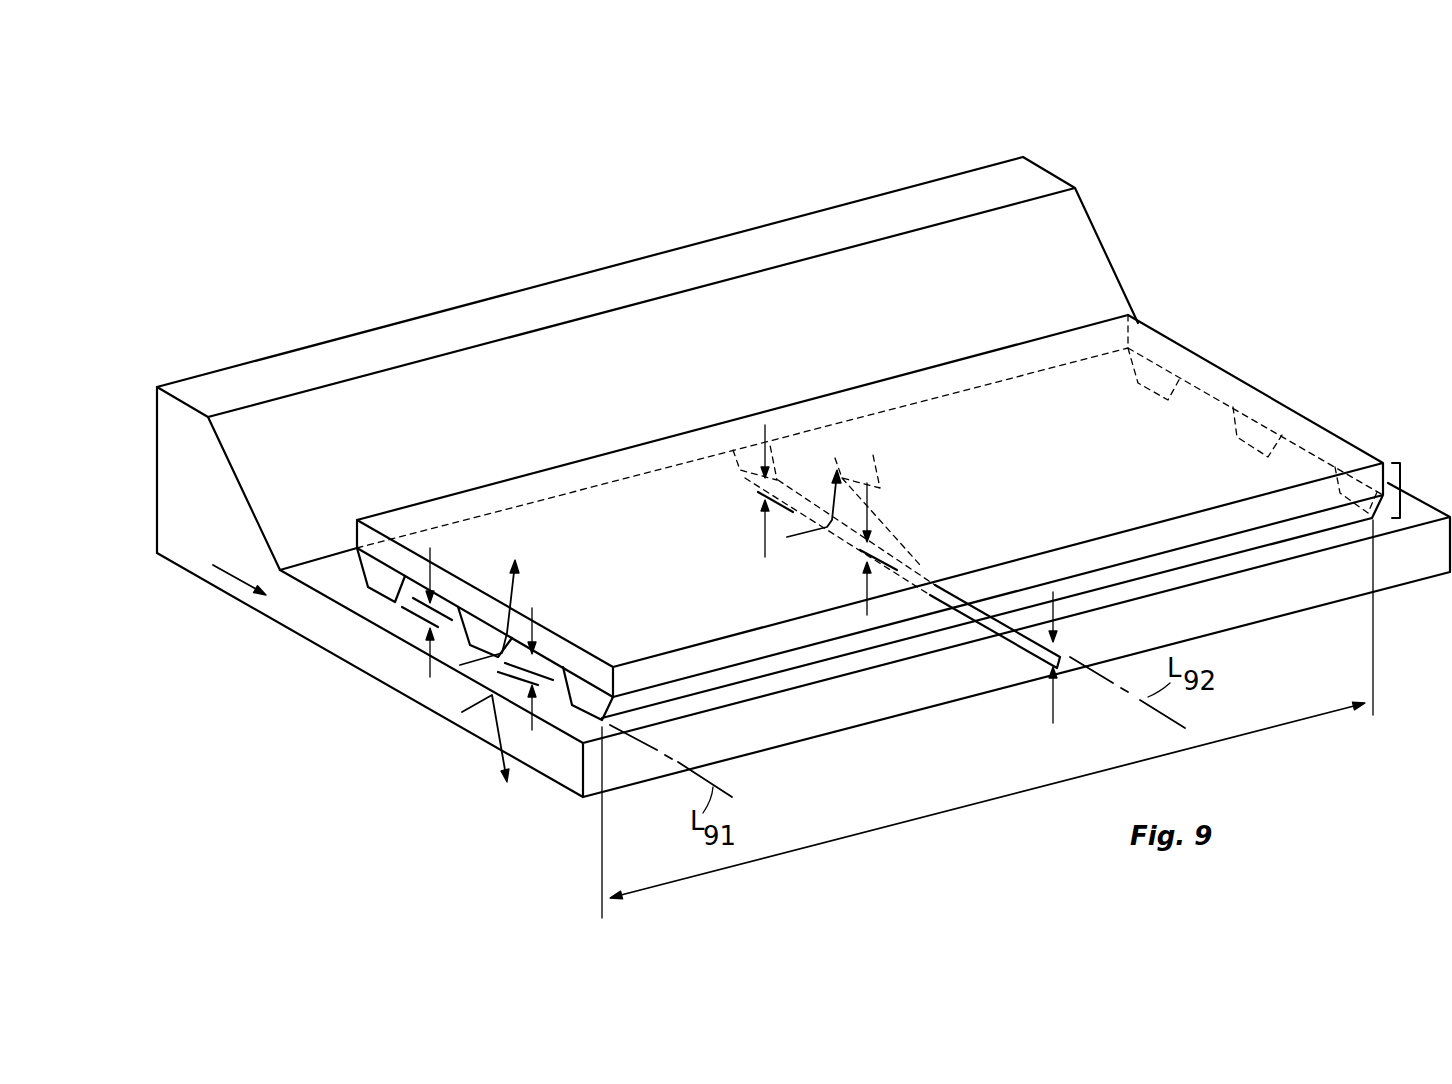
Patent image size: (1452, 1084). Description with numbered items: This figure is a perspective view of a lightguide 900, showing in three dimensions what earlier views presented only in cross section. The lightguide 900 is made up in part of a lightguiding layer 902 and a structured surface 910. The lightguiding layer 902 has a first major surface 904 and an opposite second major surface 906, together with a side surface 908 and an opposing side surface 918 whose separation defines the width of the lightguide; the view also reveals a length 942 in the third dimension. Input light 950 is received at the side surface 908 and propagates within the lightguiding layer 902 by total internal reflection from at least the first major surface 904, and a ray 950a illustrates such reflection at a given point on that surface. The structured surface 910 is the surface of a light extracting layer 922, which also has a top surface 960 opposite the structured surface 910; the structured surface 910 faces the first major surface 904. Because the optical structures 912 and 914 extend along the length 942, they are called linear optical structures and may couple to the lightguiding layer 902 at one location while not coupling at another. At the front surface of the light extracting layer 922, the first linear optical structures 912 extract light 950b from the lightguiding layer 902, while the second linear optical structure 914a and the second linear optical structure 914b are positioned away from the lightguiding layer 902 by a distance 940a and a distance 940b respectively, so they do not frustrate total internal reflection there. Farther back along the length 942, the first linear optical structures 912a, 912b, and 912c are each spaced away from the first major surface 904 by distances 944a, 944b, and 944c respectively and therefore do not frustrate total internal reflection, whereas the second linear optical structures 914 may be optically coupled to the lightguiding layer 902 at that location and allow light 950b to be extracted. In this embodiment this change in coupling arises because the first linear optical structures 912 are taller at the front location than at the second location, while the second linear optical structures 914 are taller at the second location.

The lightguide 900 is at (1189, 208).
The lightguiding layer 902 is at (182, 553).
The first major surface 904 is at (335, 580).
The second major surface 906 is at (381, 684).
The side surface 908 is at (157, 420).
The structured surface 910 is at (653, 700).
The first linear optical structures 912 is at (380, 573).
The first linear optical structure 912a is at (776, 470).
The first linear optical structure 912b is at (843, 530).
The first linear optical structure 912c is at (977, 587).
The second linear optical structures 914 is at (813, 510).
The second linear optical structure 914a is at (443, 603).
The second linear optical structure 914b is at (546, 662).
The opposing side surface 918 is at (828, 715).
The light extracting layer 922 is at (1402, 478).
The distance 940a is at (429, 678).
The distance 940b is at (533, 731).
The length 942 is at (928, 813).
The distance 944a is at (764, 537).
The distance 944b is at (866, 585).
The distance 944c is at (1052, 713).
The input light 950 is at (228, 578).
The ray 950a is at (471, 712).
The extracted light 950b is at (514, 592).
The top surface 960 is at (1158, 345).